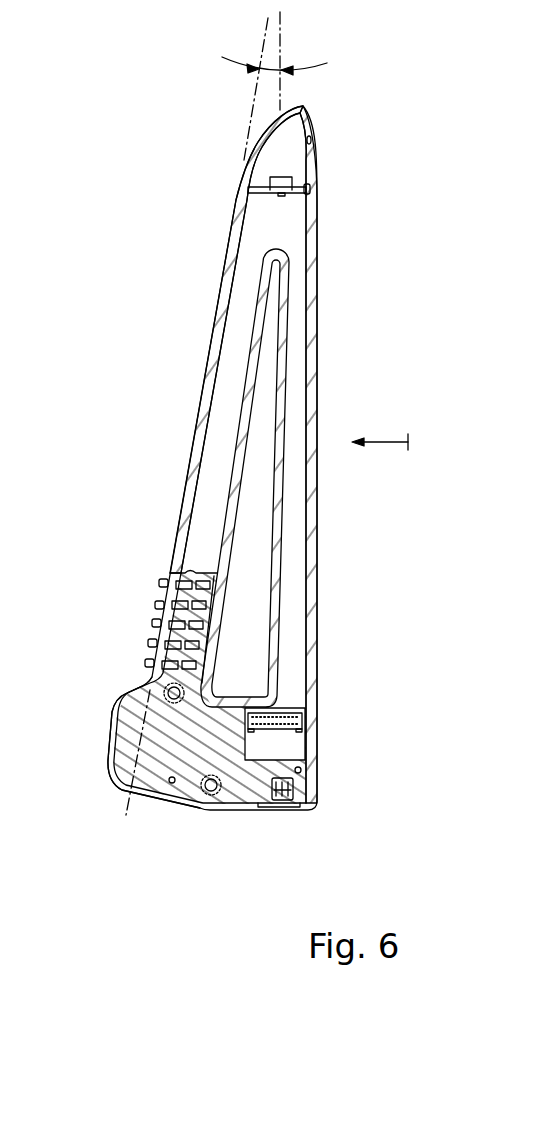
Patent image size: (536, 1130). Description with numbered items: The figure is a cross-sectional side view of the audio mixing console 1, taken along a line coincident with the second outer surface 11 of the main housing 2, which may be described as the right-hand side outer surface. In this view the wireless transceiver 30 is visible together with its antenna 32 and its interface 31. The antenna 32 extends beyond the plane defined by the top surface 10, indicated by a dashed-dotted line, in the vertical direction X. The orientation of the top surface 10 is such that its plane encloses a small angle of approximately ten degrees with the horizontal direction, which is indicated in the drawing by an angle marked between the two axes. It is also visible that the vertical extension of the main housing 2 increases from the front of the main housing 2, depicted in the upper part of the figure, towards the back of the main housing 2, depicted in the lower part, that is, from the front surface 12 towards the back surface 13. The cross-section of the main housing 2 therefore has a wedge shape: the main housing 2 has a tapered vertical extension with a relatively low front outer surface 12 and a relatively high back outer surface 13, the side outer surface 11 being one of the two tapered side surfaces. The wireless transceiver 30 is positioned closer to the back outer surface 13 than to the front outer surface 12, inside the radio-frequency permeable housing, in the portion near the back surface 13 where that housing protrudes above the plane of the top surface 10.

The audio mixing console 1 is at (366, 557).
The main housing 2 is at (318, 231).
The top surface 10 is at (207, 388).
The second outer surface 11 is at (294, 702).
The front outer surface 12 is at (297, 191).
The back outer surface 13 is at (282, 806).
The wireless transceiver 30 is at (153, 770).
The interface 31 is at (158, 626).
The antenna 32 is at (122, 757).
The vertical direction X is at (380, 431).